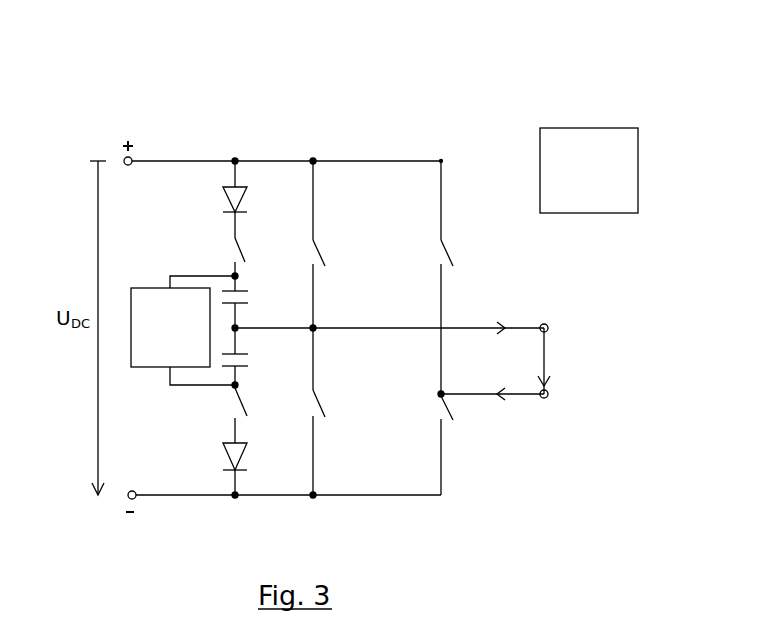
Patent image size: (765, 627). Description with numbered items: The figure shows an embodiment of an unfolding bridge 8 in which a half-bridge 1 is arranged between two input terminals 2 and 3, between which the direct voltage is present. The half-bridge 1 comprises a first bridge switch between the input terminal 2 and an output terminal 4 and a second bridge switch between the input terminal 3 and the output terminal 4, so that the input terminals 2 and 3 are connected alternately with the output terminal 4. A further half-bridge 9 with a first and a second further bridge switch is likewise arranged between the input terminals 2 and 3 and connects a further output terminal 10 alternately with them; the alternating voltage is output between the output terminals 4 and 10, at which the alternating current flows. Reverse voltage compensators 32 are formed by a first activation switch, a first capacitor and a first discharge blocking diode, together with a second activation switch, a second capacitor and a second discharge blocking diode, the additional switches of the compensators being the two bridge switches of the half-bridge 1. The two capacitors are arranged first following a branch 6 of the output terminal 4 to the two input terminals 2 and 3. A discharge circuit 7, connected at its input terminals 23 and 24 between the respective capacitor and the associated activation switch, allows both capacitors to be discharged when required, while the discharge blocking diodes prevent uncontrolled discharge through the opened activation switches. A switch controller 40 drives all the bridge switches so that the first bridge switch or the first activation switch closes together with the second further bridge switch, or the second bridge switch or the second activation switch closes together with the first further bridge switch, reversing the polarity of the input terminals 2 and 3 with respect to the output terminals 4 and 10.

The half-bridge 1 is at (318, 122).
The input terminal 2 is at (124, 158).
The input terminal 3 is at (128, 497).
The output terminal 4 is at (549, 326).
The branch 6 is at (248, 332).
The discharge circuit 7 is at (140, 287).
The unfolding bridge 8 is at (501, 138).
The further half-bridge 9 is at (448, 135).
The further output terminal 10 is at (548, 397).
The input terminal of the discharge circuit 23 is at (233, 275).
The input terminal of the discharge circuit 24 is at (232, 387).
The reverse voltage compensator 32 is at (252, 263).
The switch controller 40 is at (595, 128).